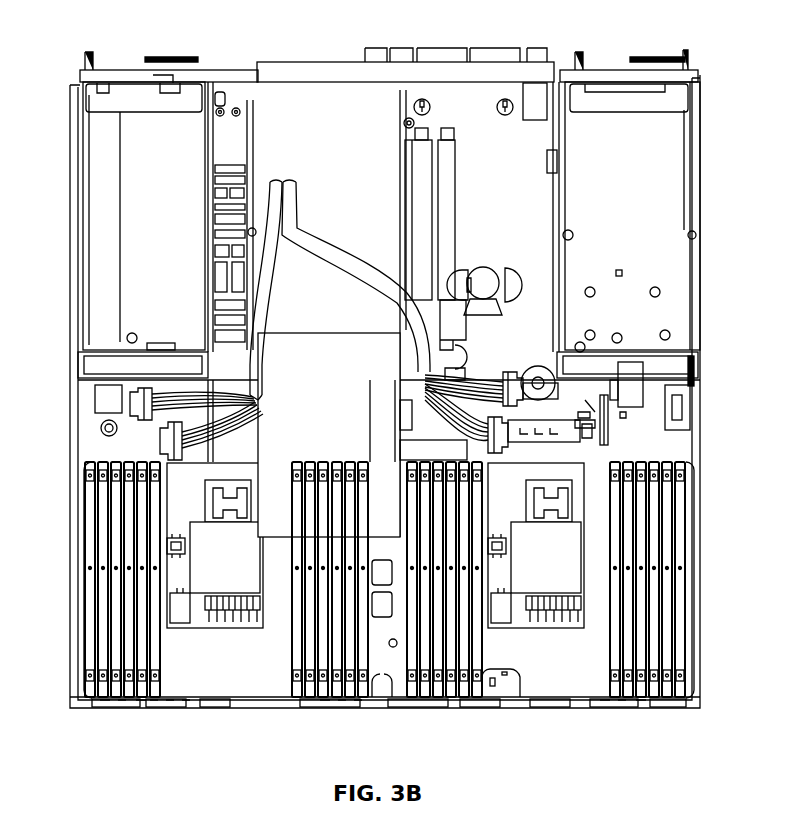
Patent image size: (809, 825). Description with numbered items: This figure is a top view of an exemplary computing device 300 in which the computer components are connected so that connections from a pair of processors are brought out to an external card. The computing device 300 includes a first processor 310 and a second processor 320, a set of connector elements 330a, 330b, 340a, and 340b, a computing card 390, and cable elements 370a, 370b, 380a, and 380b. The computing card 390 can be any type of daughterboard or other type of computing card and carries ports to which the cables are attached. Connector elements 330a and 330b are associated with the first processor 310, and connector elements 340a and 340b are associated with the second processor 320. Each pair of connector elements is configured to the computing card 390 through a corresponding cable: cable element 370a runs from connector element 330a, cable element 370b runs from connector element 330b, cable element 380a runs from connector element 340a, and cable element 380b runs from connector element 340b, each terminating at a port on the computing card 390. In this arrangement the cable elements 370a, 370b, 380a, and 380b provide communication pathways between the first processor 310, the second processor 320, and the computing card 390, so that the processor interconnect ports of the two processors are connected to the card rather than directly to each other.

The computing device 300 is at (78, 707).
The first processor 310 is at (170, 155).
The second processor 320 is at (655, 150).
The connector element 330a is at (128, 402).
The connector element 330b is at (160, 440).
The connector element 340a is at (520, 400).
The connector element 340b is at (506, 443).
The cable element 370a is at (257, 406).
The cable element 370b is at (193, 452).
The cable element 380a is at (418, 388).
The cable element 380b is at (523, 445).
The computing card 390 is at (292, 108).